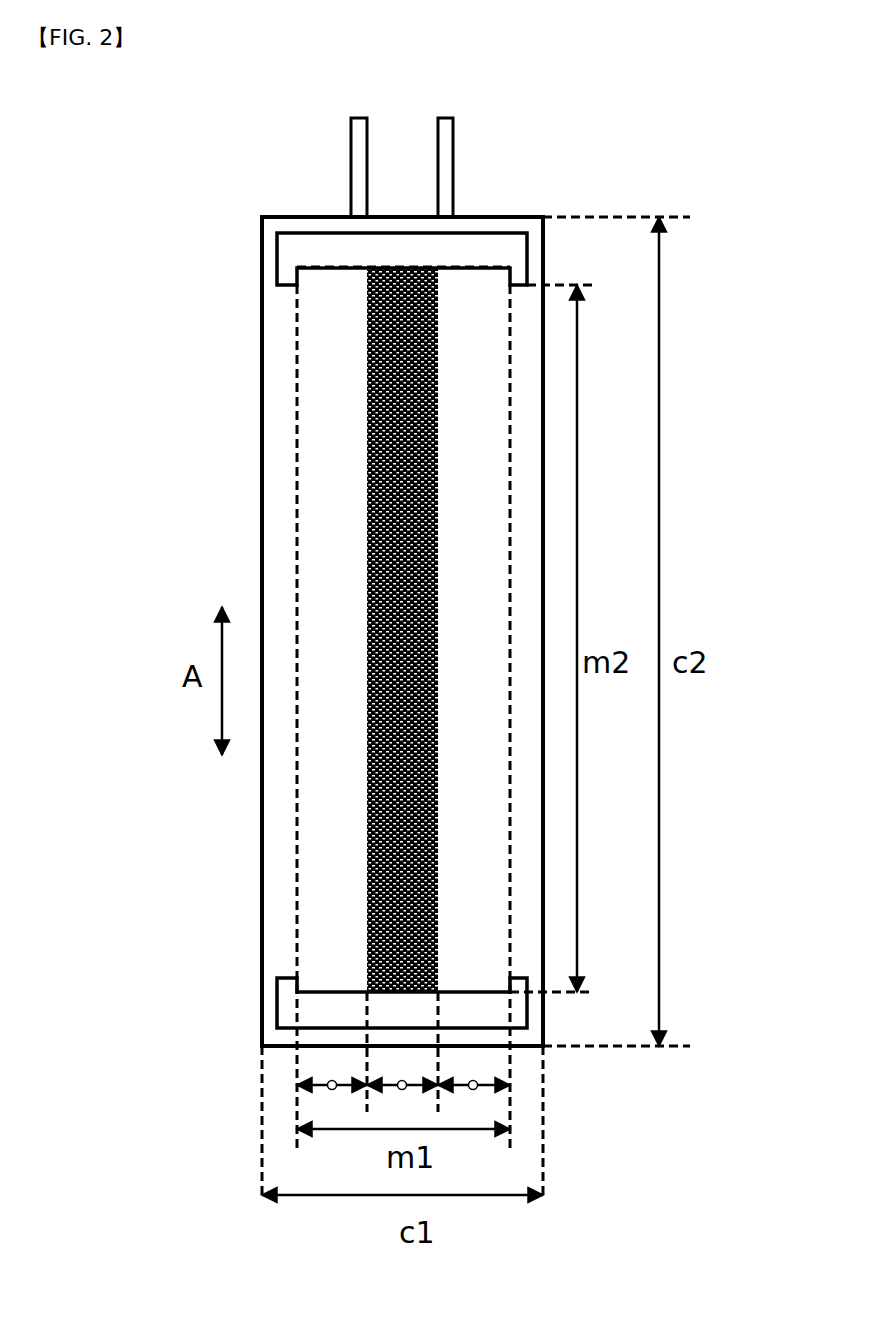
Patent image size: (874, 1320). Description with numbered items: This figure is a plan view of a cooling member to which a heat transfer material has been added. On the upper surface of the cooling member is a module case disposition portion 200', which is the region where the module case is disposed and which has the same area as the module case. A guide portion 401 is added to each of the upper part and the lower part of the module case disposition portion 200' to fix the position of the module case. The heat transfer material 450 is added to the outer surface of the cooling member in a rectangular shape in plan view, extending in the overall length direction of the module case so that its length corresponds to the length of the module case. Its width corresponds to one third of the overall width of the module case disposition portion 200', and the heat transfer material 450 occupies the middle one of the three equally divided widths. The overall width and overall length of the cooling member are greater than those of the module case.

The module case disposition portion 200' is at (548, 582).
The guide portion 401 is at (282, 259).
The heat transfer material 450 is at (372, 500).